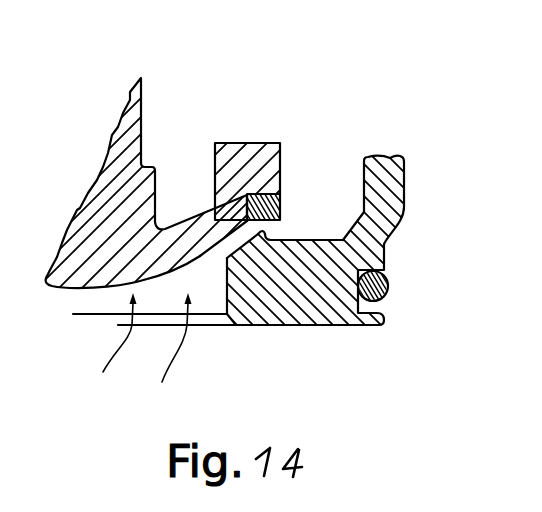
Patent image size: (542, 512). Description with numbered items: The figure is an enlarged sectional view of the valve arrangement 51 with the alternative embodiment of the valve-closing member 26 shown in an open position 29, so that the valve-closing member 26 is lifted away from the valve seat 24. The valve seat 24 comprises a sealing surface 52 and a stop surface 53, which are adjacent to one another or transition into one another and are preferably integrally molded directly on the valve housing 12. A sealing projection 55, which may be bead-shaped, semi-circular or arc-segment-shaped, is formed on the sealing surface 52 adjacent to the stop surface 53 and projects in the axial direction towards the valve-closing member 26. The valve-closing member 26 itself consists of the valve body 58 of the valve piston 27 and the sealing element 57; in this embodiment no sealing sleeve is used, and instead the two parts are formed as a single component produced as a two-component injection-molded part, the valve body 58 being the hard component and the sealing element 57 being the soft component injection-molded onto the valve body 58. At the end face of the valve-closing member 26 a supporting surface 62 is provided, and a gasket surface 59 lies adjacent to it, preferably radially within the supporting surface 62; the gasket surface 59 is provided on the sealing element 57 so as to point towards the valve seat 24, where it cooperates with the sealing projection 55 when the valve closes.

The valve housing 12 is at (316, 290).
The valve seat 24 is at (247, 270).
The valve-closing member 26 is at (113, 347).
The valve piston 27 is at (160, 96).
The open position 29 is at (171, 350).
The valve arrangement 51 is at (358, 124).
The sealing surface 52 is at (301, 240).
The stop surface 53 is at (222, 248).
The sealing projection 55 is at (288, 237).
The sealing element 57 is at (262, 167).
The valve body 58 is at (104, 233).
The gasket surface 59 is at (250, 228).
The supporting surface 62 is at (203, 259).